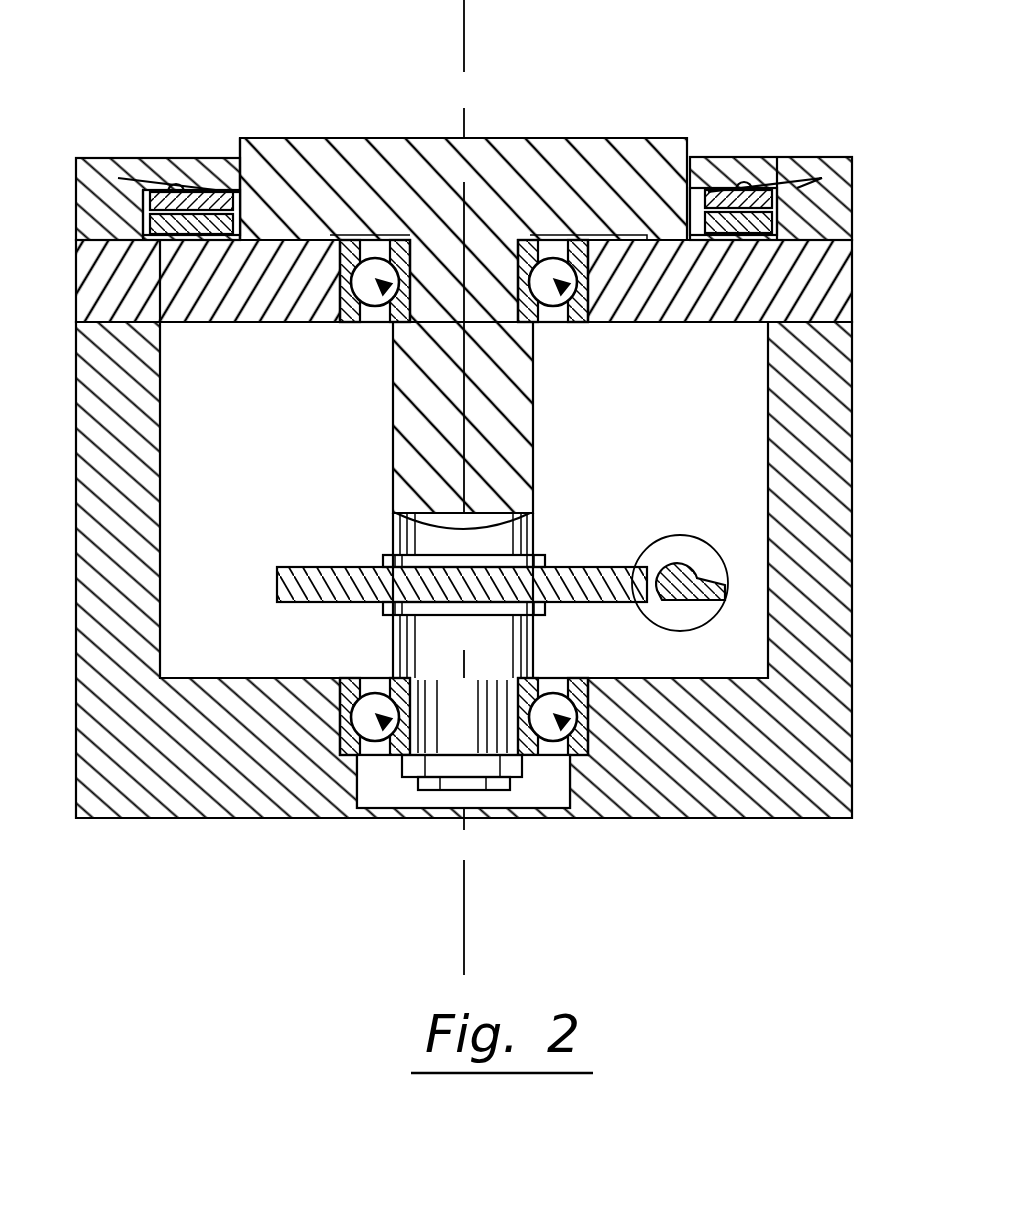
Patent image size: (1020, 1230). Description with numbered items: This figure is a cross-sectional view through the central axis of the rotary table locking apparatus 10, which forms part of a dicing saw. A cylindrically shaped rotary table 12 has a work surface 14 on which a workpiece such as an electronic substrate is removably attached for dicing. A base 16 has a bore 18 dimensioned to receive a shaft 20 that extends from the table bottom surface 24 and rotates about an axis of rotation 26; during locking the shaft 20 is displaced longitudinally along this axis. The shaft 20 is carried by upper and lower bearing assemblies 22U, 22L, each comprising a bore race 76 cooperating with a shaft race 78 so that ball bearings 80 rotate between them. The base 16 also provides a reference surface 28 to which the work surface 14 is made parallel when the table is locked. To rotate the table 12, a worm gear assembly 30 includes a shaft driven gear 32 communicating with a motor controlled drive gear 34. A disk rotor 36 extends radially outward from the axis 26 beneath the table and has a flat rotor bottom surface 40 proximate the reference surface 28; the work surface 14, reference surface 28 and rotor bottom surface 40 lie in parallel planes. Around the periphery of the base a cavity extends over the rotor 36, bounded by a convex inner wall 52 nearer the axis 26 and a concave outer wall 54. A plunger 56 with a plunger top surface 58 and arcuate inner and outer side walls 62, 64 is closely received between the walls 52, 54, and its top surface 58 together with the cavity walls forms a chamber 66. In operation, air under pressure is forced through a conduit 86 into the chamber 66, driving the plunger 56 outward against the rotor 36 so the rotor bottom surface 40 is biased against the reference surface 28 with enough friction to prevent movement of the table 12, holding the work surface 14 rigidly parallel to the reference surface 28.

The apparatus 10 is at (222, 84).
The rotary table 12 is at (437, 158).
The work surface 14 is at (597, 137).
The base 16 is at (856, 463).
The bore 18 is at (355, 328).
The shaft 20 is at (527, 474).
The upper bearing assembly 22U is at (562, 330).
The lower bearing assembly 22L is at (557, 667).
The table bottom surface 24 is at (298, 238).
The axis of rotation 26 is at (468, 37).
The reference surface 28 is at (637, 237).
The worm gear assembly 30 is at (648, 522).
The shaft driven gear 32 is at (553, 568).
The drive gear 34 is at (698, 622).
The disk rotor 36 is at (147, 218).
The rotor bottom surface 40 is at (160, 215).
The cavity inner wall 52 is at (723, 183).
The cavity outer wall 54 is at (848, 212).
The plunger 56 is at (140, 158).
The plunger top surface 58 is at (180, 158).
The plunger inner side wall 62 is at (289, 141).
The plunger outer side wall 64 is at (143, 192).
The chamber 66 is at (742, 182).
The bore race 76 is at (355, 682).
The shaft race 78 is at (397, 760).
The ball bearings 80 is at (362, 712).
The conduit 86 is at (818, 170).